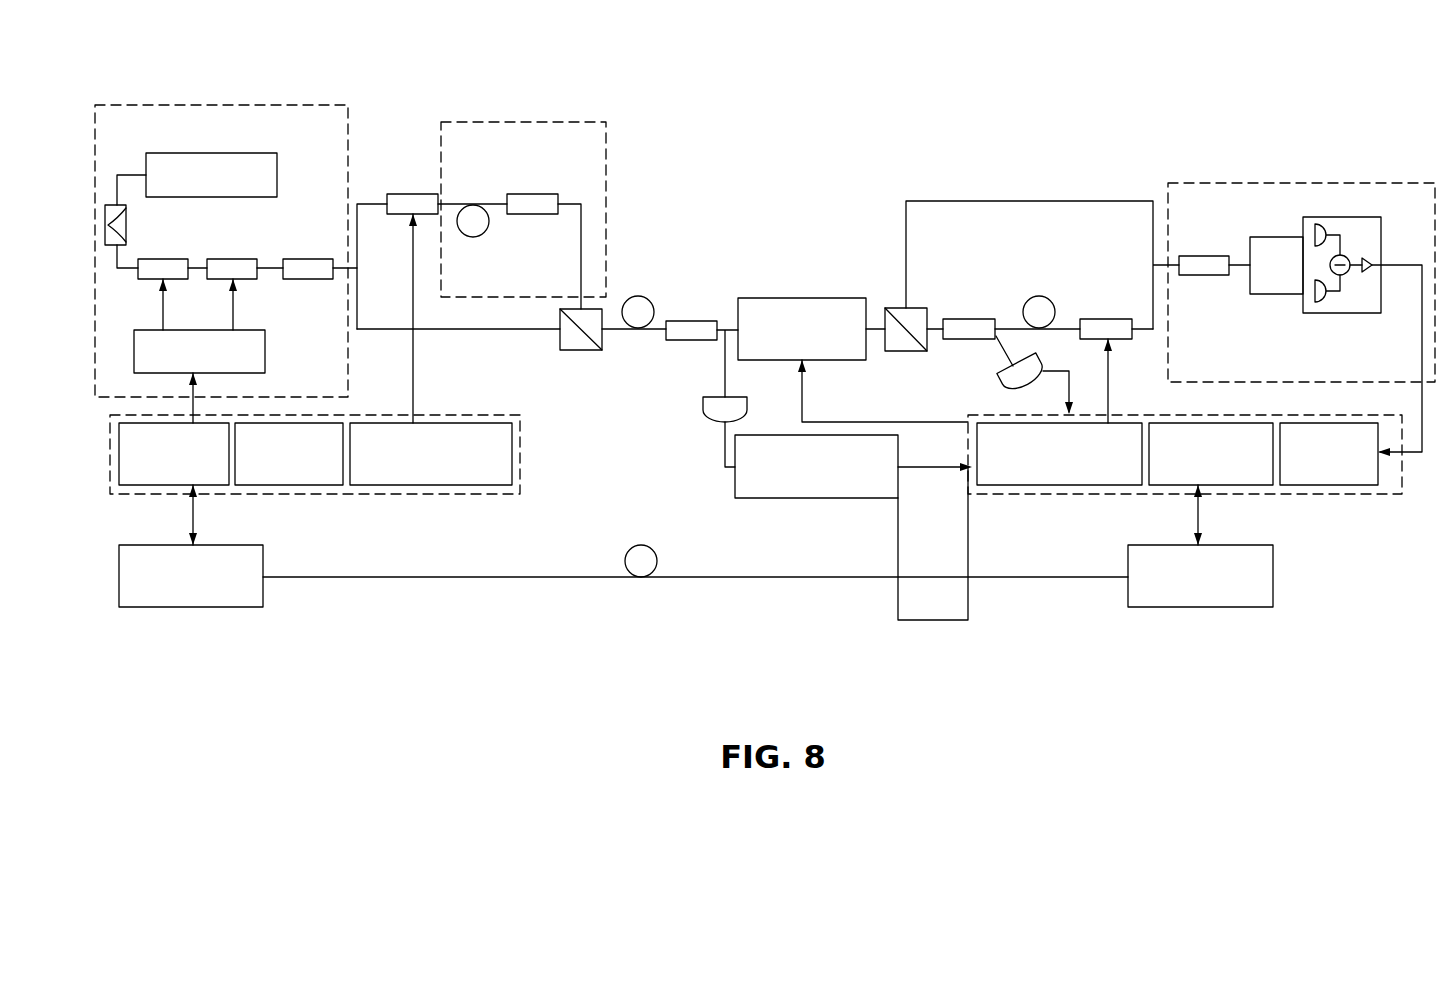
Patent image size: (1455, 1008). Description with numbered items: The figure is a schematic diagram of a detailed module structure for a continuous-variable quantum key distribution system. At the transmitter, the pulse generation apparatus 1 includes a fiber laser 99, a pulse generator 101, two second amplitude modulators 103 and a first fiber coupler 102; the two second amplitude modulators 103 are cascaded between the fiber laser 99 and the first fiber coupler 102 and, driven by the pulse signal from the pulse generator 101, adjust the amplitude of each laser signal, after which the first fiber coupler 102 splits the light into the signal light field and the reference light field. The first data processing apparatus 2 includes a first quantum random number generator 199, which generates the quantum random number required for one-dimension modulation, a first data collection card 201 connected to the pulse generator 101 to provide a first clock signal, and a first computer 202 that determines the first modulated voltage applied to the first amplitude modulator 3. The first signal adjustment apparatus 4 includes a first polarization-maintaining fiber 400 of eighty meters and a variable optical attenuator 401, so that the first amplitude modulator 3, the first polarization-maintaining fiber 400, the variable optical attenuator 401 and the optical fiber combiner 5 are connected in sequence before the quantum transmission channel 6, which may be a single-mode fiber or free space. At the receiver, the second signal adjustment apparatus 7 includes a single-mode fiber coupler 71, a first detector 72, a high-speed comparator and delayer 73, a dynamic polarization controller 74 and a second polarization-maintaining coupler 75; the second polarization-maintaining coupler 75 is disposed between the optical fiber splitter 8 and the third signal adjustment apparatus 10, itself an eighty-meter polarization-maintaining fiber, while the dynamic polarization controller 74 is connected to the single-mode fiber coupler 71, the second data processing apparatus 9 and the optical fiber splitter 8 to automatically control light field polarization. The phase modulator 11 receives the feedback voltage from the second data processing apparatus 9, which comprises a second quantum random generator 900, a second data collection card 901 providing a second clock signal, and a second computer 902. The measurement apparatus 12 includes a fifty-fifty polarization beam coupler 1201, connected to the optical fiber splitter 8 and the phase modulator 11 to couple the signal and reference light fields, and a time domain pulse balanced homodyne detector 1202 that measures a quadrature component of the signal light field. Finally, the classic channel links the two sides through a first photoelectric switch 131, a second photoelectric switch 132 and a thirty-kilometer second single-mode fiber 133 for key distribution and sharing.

The pulse generation apparatus 1 is at (326, 104).
The fiber laser 99 is at (270, 153).
The second amplitude modulators 103 is at (178, 259).
The first fiber coupler 102 is at (314, 259).
The pulse generator 101 is at (265, 350).
The first amplitude modulator 3 is at (422, 194).
The first signal adjustment apparatus 4 is at (589, 120).
The variable optical attenuator 401 is at (541, 194).
The first polarization-maintaining fiber 400 is at (471, 237).
The optical fiber combiner 5 is at (581, 352).
The quantum transmission channel 6 is at (638, 296).
The single-mode fiber coupler 71 is at (700, 321).
The first detector 72 is at (703, 405).
The delayer 73 is at (735, 488).
The dynamic polarization controller 74 is at (838, 298).
The second signal adjustment apparatus 7 is at (768, 501).
The optical fiber splitter 8 is at (897, 353).
The second polarization-maintaining coupler 75 is at (977, 319).
The third signal adjustment apparatus 10 is at (1040, 296).
The phase modulator 11 is at (1115, 319).
The measurement apparatus 12 is at (1418, 180).
The 50/50 polarization beam coupler 1201 is at (1212, 256).
The time domain pulse balanced homodyne detector 1202 is at (1333, 313).
The first data processing apparatus 2 is at (525, 485).
The first computer 202 is at (135, 487).
The first data collection card 201 is at (330, 487).
The first quantum random number generator 199 is at (500, 487).
The first photoelectric switch 131 is at (265, 598).
The second photoelectric switch 132 is at (1273, 590).
The second single-mode fiber 133 is at (641, 545).
The second data processing apparatus 9 is at (1399, 498).
The second quantum random generator 900 is at (1005, 487).
The second data collection card 901 is at (1255, 487).
The second computer 902 is at (1368, 487).